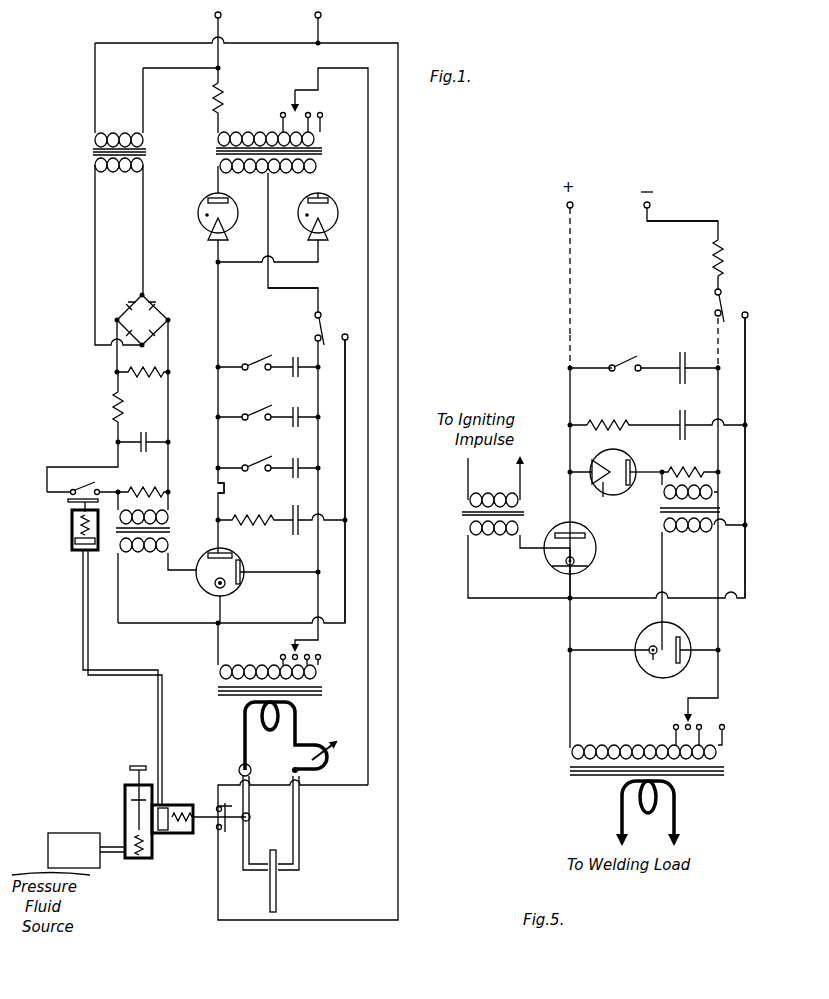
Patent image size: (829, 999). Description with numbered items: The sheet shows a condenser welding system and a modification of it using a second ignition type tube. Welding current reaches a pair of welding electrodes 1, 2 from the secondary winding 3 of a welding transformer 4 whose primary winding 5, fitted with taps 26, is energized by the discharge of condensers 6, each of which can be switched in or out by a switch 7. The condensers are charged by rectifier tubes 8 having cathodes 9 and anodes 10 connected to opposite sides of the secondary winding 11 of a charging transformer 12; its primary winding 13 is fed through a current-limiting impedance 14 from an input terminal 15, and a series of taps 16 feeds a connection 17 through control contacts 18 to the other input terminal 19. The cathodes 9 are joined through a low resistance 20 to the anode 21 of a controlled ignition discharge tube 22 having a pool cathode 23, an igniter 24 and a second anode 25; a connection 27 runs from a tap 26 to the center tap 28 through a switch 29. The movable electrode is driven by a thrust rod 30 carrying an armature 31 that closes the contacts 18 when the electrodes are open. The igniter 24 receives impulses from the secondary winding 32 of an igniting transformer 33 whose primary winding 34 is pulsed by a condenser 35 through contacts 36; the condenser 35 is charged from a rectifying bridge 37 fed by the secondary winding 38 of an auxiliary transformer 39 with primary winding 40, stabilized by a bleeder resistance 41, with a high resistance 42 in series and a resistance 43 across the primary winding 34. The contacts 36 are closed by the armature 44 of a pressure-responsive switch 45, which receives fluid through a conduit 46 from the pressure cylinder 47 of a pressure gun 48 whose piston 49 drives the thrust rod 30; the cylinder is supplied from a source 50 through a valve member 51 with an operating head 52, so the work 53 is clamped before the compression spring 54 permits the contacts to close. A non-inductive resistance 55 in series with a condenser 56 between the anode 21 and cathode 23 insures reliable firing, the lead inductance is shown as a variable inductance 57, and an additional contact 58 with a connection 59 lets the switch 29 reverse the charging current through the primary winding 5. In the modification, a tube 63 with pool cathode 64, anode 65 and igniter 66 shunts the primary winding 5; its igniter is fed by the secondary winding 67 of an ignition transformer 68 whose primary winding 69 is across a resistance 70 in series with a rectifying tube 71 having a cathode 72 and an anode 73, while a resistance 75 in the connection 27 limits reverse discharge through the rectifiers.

In FIG. 1, the welding electrode 1 is at (249, 876).
In FIG. 1, the welding electrode 2 is at (300, 870).
In FIG. 1, the secondary winding 3 is at (270, 730).
In FIG. 5, the secondary winding 3 is at (648, 812).
In FIG. 1, the welding transformer 4 is at (220, 696).
In FIG. 5, the welding transformer 4 is at (590, 777).
In FIG. 1, the primary winding 5 is at (218, 670).
In FIG. 5, the primary winding 5 is at (570, 748).
In FIG. 1, the condenser 6 is at (302, 456).
In FIG. 5, the condenser 6 is at (688, 355).
In FIG. 1, the switch 7 is at (266, 458).
In FIG. 5, the switch 7 is at (633, 362).
In FIG. 1, the rectifier tube 8 is at (330, 222).
In FIG. 1, the cathode 9 is at (312, 228).
In FIG. 1, the anode 10 is at (329, 198).
In FIG. 1, the secondary winding 11 is at (220, 165).
In FIG. 1, the charging transformer 12 is at (326, 150).
In FIG. 1, the primary winding 13 is at (262, 130).
In FIG. 1, the current-limiting impedance 14 is at (216, 95).
In FIG. 1, the input terminal 15 is at (214, 15).
In FIG. 1, the taps 16 is at (322, 112).
In FIG. 1, the connection 17 is at (318, 80).
In FIG. 1, the control contacts 18 is at (221, 831).
In FIG. 1, the input terminal 19 is at (322, 13).
In FIG. 1, the resistance 20 is at (214, 488).
In FIG. 1, the anode 21 is at (235, 558).
In FIG. 5, the anode 21 is at (567, 532).
In FIG. 1, the controlled ignition discharge tube 22 is at (206, 560).
In FIG. 5, the controlled ignition discharge tube 22 is at (550, 556).
In FIG. 1, the pool cathode 23 is at (232, 590).
In FIG. 5, the pool cathode 23 is at (585, 572).
In FIG. 1, the igniter 24 is at (214, 582).
In FIG. 5, the igniter 24 is at (578, 562).
In FIG. 1, the second anode 25 is at (242, 570).
In FIG. 1, the taps 26 is at (320, 655).
In FIG. 5, the taps 26 is at (722, 722).
In FIG. 1, the connection 27 is at (300, 288).
In FIG. 5, the connection 27 is at (685, 221).
In FIG. 1, the center tap 28 is at (270, 176).
In FIG. 1, the switch 29 is at (326, 322).
In FIG. 5, the switch 29 is at (723, 310).
In FIG. 1, the thrust rod 30 is at (208, 823).
In FIG. 1, the armature 31 is at (230, 806).
In FIG. 1, the secondary winding 32 is at (145, 553).
In FIG. 5, the secondary winding 32 is at (497, 538).
In FIG. 1, the igniting transformer 33 is at (118, 533).
In FIG. 5, the igniting transformer 33 is at (462, 515).
In FIG. 1, the primary winding 34 is at (162, 515).
In FIG. 5, the primary winding 34 is at (492, 492).
In FIG. 1, the condenser 35 is at (148, 432).
In FIG. 1, the contacts 36 is at (82, 480).
In FIG. 1, the full-wave rectifying bridge 37 is at (150, 316).
In FIG. 1, the secondary winding 38 is at (119, 172).
In FIG. 1, the auxiliary transformer 39 is at (150, 150).
In FIG. 1, the primary winding 40 is at (120, 132).
In FIG. 1, the bleeder resistance 41 is at (145, 377).
In FIG. 1, the resistance 42 is at (115, 406).
In FIG. 1, the resistance 43 is at (145, 486).
In FIG. 1, the armature 44 is at (68, 503).
In FIG. 1, the pressure-responsive switch 45 is at (73, 547).
In FIG. 1, the conduit 46 is at (83, 610).
In FIG. 1, the pressure cylinder 47 is at (160, 836).
In FIG. 1, the pressure gun 48 is at (130, 868).
In FIG. 1, the piston 49 is at (178, 806).
In FIG. 1, the source of pressure fluid 50 is at (70, 843).
In FIG. 1, the valve member 51 is at (130, 774).
In FIG. 1, the operating head 52 is at (145, 766).
In FIG. 1, the work 53 is at (280, 890).
In FIG. 1, the compression spring 54 is at (78, 527).
In FIG. 1, the resistance 55 is at (268, 500).
In FIG. 5, the resistance 55 is at (622, 420).
In FIG. 1, the condenser 56 is at (303, 495).
In FIG. 5, the condenser 56 is at (683, 412).
In FIG. 1, the inductance 57 is at (320, 746).
In FIG. 1, the additional contact 58 is at (348, 340).
In FIG. 5, the additional contact 58 is at (748, 316).
In FIG. 1, the connection 59 is at (340, 627).
In FIG. 5, the connection 59 is at (748, 470).
In FIG. 5, the tube 63 is at (675, 628).
In FIG. 5, the pool type cathode 64 is at (650, 645).
In FIG. 5, the anode 65 is at (682, 660).
In FIG. 5, the igniter 66 is at (655, 660).
In FIG. 5, the secondary winding 67 is at (690, 535).
In FIG. 5, the ignition transformer 68 is at (660, 511).
In FIG. 5, the primary winding 69 is at (664, 492).
In FIG. 5, the resistance 70 is at (690, 466).
In FIG. 5, the rectifying tube 71 is at (622, 456).
In FIG. 5, the cathode 72 is at (603, 498).
In FIG. 5, the anode 73 is at (633, 466).
In FIG. 5, the resistance 75 is at (713, 258).